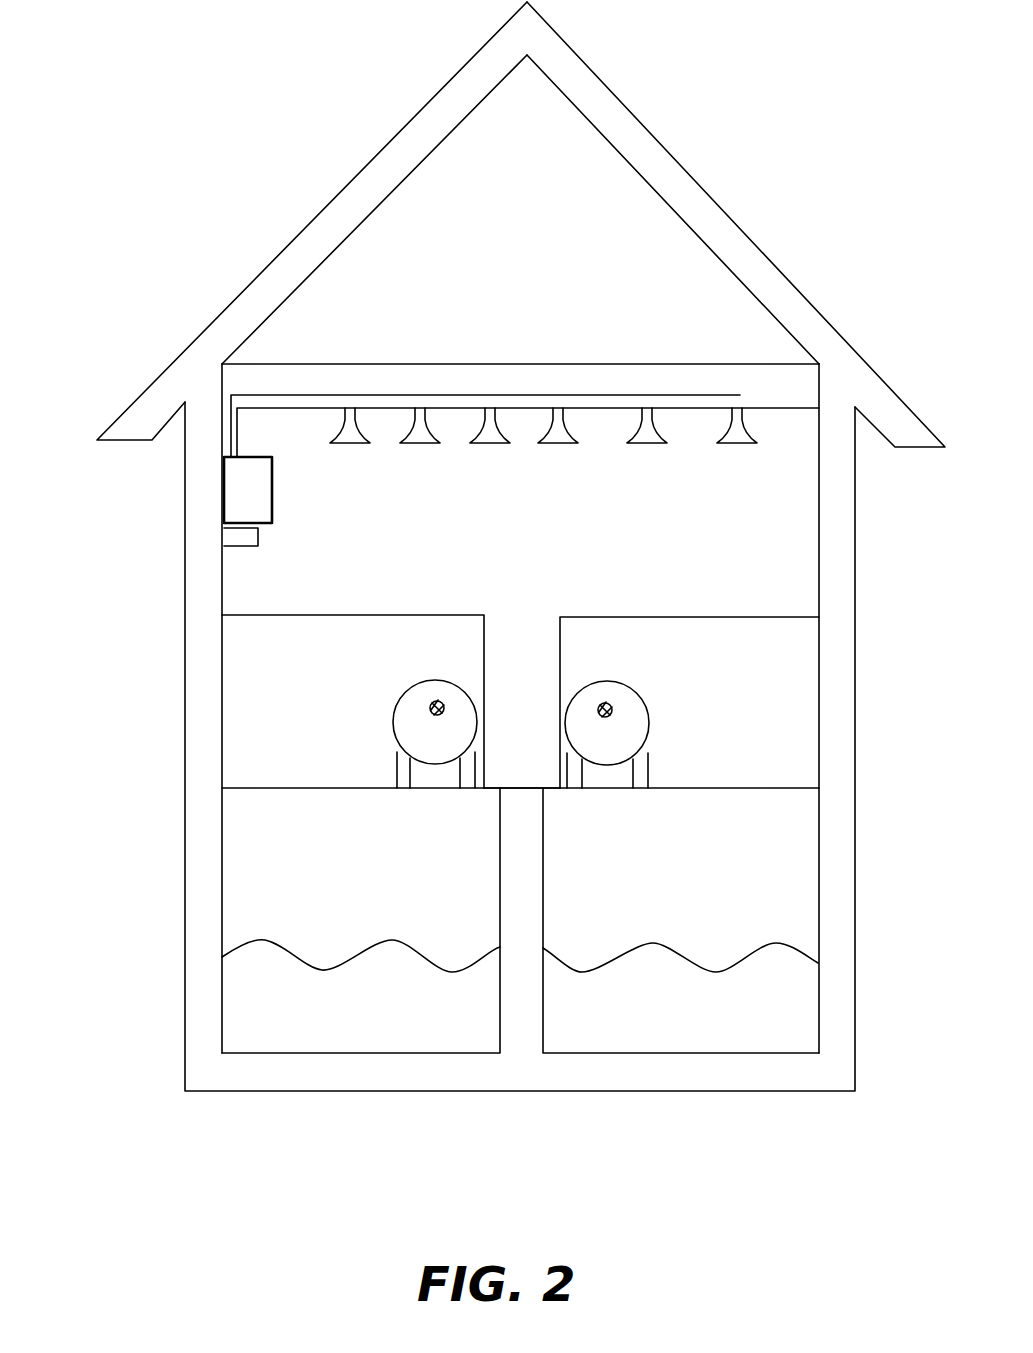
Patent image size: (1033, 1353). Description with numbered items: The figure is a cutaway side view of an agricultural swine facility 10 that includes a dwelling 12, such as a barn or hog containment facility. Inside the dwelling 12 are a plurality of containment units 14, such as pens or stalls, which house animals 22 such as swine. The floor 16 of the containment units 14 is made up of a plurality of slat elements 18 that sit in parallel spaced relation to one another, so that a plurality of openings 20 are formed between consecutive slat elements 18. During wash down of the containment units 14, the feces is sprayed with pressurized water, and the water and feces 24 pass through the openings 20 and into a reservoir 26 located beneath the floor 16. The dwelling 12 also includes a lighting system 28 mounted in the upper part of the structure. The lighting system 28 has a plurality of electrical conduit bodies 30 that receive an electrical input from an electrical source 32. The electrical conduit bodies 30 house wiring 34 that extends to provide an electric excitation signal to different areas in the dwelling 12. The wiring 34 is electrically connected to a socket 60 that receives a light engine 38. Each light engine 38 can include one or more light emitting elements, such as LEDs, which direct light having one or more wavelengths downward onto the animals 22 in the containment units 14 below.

The swine facility 10 is at (110, 633).
The dwelling 12 is at (288, 145).
The containment units 14 is at (235, 630).
The floor 16 is at (513, 787).
The slat elements 18 is at (298, 787).
The openings 20 is at (290, 787).
The animals 22 is at (431, 697).
The water and feces 24 is at (282, 977).
The reservoir 26 is at (291, 840).
The lighting system 28 is at (521, 416).
The electrical conduit bodies 30 is at (327, 383).
The electrical source 32 is at (233, 505).
The wiring 34 is at (352, 403).
The light engine 38 is at (502, 457).
The socket 60 is at (657, 417).